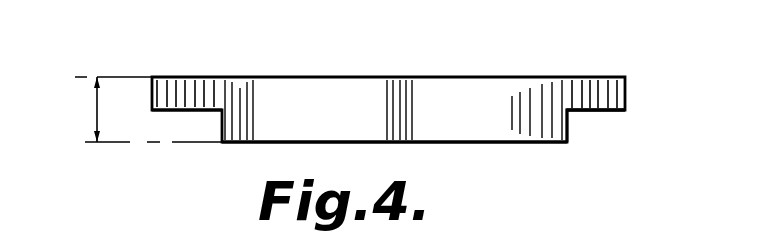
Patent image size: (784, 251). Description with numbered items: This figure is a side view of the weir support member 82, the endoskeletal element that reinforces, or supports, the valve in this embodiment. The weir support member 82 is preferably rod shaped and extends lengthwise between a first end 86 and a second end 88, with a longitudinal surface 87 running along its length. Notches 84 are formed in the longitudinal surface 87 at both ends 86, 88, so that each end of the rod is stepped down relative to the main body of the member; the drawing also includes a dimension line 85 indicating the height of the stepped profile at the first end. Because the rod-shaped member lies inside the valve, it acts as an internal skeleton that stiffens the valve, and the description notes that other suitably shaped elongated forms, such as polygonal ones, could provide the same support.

The weir support member 82 is at (428, 77).
The notches 84 is at (600, 113).
The height dimension 85 is at (97, 110).
The first end 86 is at (150, 97).
The longitudinal surface 87 is at (447, 118).
The second end 88 is at (626, 90).